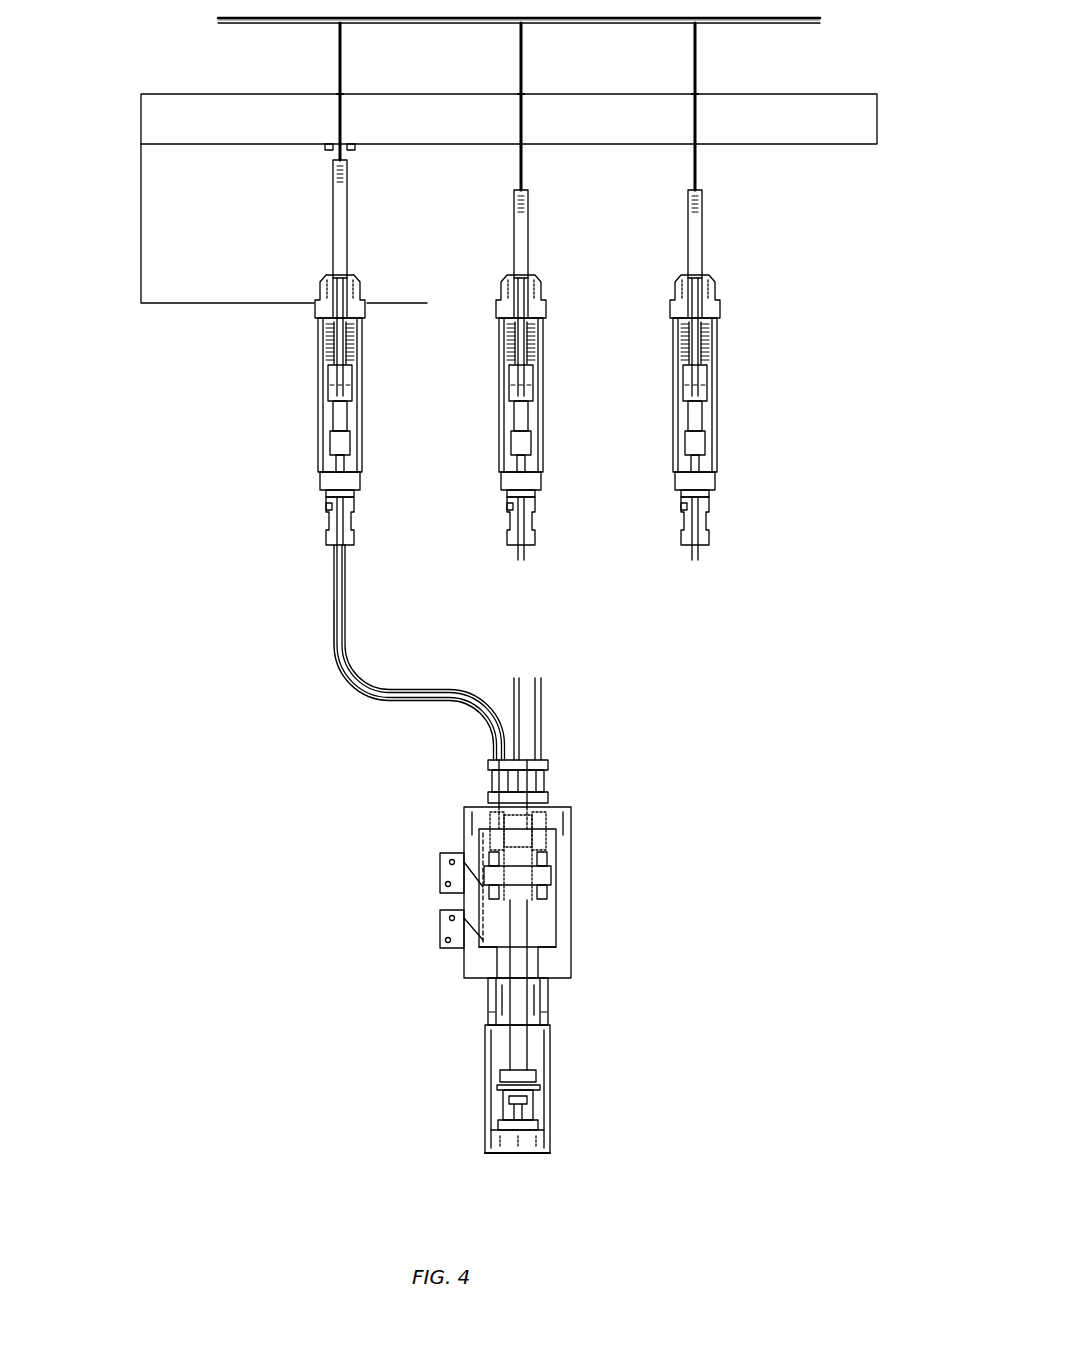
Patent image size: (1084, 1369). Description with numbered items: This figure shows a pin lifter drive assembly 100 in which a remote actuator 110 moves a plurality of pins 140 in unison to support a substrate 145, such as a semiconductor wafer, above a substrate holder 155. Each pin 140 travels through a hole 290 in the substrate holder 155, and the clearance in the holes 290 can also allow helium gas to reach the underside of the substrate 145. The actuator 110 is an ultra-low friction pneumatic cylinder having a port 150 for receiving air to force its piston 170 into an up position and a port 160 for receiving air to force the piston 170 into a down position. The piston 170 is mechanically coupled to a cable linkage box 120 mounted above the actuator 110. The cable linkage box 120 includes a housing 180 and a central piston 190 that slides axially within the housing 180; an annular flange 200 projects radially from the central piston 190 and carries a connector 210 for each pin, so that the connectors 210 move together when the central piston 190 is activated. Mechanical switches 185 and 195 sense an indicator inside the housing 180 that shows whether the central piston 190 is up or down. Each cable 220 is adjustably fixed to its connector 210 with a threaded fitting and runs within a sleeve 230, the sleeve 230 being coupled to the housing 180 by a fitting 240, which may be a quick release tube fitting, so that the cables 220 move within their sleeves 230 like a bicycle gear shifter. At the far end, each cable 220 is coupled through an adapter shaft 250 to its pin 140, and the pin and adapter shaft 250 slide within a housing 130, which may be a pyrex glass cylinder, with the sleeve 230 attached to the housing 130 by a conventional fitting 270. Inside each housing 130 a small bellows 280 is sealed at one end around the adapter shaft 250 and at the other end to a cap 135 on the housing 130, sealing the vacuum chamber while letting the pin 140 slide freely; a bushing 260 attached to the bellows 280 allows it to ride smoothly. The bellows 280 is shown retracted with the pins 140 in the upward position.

The drive assembly 100 is at (718, 631).
The actuator 110 is at (486, 1060).
The cable linkage box 120 is at (574, 952).
The housing 130 is at (365, 348).
The cap 135 is at (362, 310).
The pin 140 is at (338, 46).
The substrate 145 is at (218, 20).
The port 150 is at (517, 1157).
The substrate holder 155 is at (141, 120).
The port 160 is at (550, 997).
The piston 170 is at (536, 1116).
The housing 180 is at (565, 846).
The mechanical switch 185 is at (438, 872).
The central piston 190 is at (540, 936).
The mechanical switch 195 is at (438, 928).
The annular flange 200 is at (548, 875).
The connector 210 is at (497, 840).
The cable 220 is at (383, 690).
The sleeve 230 is at (392, 703).
The fitting 240 is at (550, 773).
The adapter shaft 250 is at (332, 196).
The bushing 260 is at (352, 382).
The fitting 270 is at (354, 516).
The bellows 280 is at (320, 352).
The hole 290 is at (337, 91).